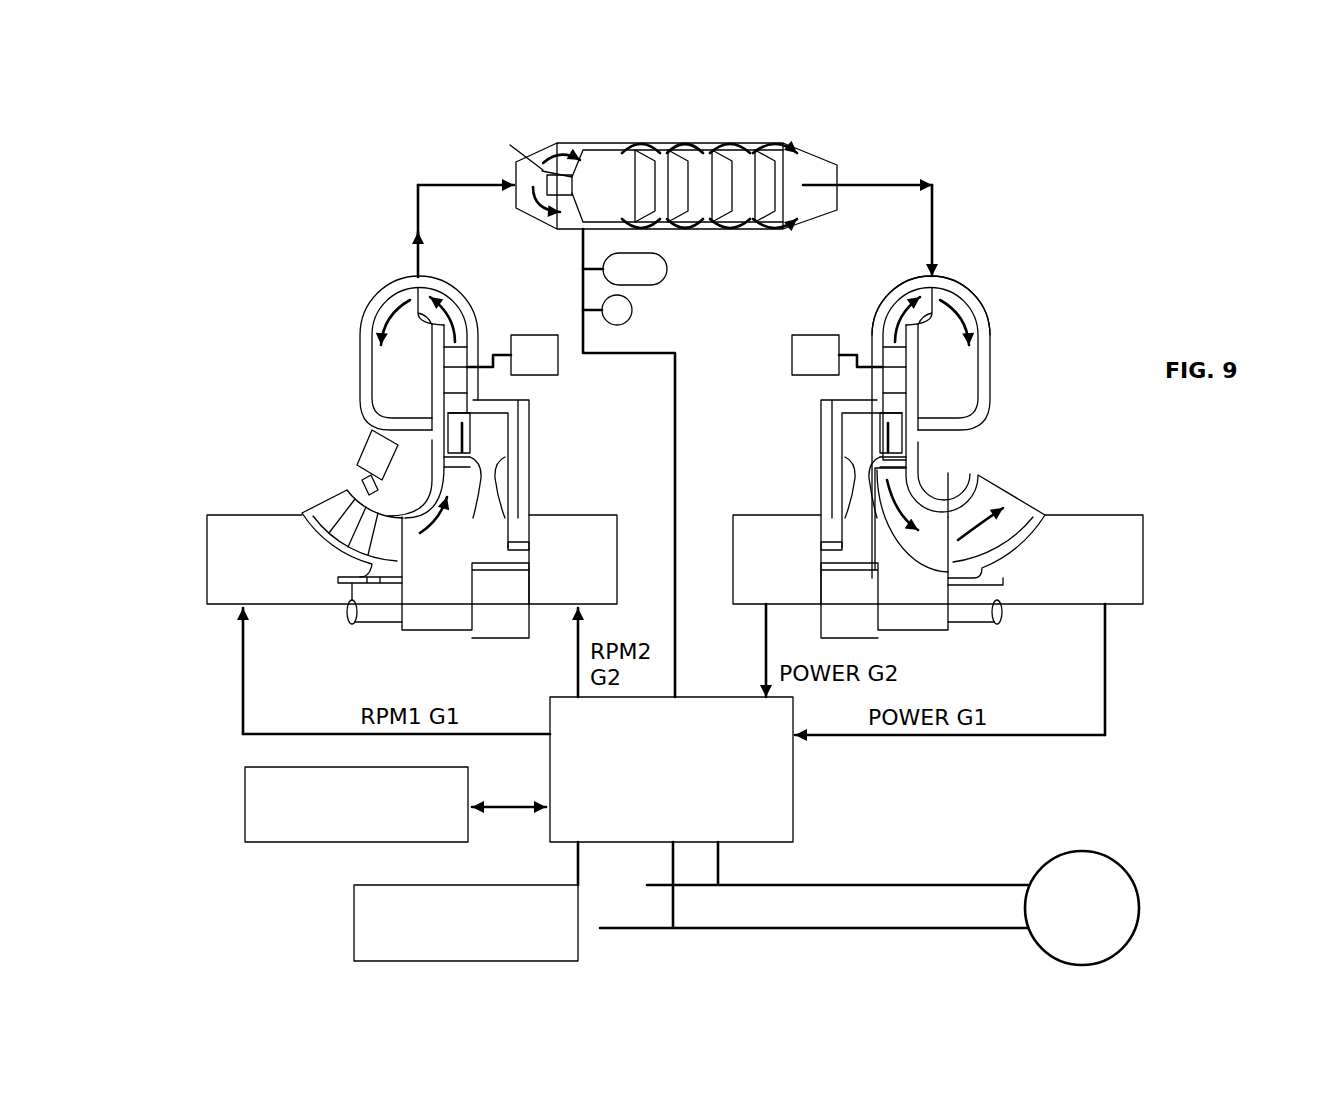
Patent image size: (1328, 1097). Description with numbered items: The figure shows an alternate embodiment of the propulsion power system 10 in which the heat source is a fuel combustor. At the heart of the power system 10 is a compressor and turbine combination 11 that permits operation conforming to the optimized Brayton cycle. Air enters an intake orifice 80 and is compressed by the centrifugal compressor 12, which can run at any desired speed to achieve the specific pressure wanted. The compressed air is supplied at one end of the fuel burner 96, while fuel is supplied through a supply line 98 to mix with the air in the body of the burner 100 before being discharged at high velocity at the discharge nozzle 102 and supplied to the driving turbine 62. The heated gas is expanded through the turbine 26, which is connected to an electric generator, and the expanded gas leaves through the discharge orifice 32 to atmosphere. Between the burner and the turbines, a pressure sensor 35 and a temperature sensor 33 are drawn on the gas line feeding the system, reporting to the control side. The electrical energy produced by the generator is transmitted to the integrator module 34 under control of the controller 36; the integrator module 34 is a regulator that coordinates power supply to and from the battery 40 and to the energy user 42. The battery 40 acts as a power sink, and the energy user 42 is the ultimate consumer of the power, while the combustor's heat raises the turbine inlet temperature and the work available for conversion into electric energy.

The power system 10 is at (733, 312).
The compressor and turbine combination 11 is at (337, 305).
The centrifugal compressor 12 is at (393, 278).
The turbine 26 is at (957, 278).
The discharge orifice 32 is at (530, 545).
The temperature sensor 33 is at (632, 312).
The integrator module 34 is at (793, 780).
The pressure sensor 35 is at (667, 275).
The controller 36 is at (354, 905).
The battery 40 is at (245, 787).
The energy user 42 is at (1130, 873).
The turbine 62 is at (990, 385).
The intake orifice 80 is at (810, 147).
The fuel burner 96 is at (515, 162).
The supply line 98 is at (522, 150).
The body of the burner 100 is at (710, 180).
The discharge nozzle 102 is at (842, 170).